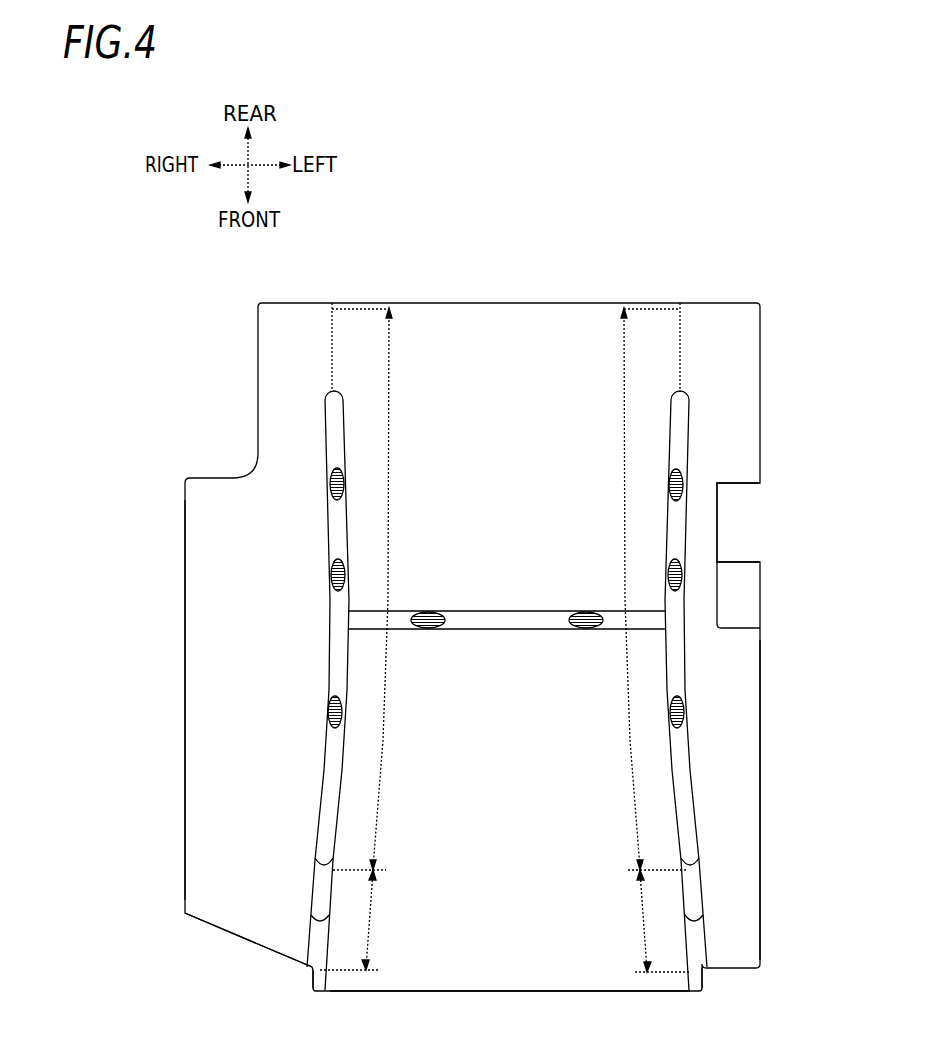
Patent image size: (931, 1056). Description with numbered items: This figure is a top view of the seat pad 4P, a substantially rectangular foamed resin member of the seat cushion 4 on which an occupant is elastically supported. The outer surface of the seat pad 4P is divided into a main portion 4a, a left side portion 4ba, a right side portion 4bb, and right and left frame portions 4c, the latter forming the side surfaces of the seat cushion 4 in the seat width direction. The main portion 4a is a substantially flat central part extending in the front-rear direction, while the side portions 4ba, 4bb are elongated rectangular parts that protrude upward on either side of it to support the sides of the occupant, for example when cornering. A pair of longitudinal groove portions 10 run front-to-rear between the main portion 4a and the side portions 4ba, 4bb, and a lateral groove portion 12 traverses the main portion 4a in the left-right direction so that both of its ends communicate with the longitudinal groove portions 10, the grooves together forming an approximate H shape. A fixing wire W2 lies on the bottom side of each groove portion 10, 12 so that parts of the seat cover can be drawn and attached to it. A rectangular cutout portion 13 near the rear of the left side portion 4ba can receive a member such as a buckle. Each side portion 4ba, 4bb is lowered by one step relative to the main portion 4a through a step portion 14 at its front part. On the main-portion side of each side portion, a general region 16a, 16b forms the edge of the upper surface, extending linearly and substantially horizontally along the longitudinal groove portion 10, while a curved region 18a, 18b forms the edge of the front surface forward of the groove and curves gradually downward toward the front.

The seat pad 4P is at (472, 597).
The seat cushion 4 is at (549, 258).
The main portion 4a is at (520, 813).
The left side portion 4ba is at (740, 748).
The right side portion 4bb is at (275, 688).
The frame portion 4c is at (182, 677).
The longitudinal groove portion 10 is at (327, 800).
The lateral groove portion 12 is at (508, 622).
The cutout portion 13 is at (723, 526).
The step portion 14 is at (322, 921).
The general region 16a is at (626, 589).
The general region 16b is at (388, 589).
The curved region 18a is at (659, 921).
The curved region 18b is at (353, 920).
The fixing wire W2 is at (330, 487).